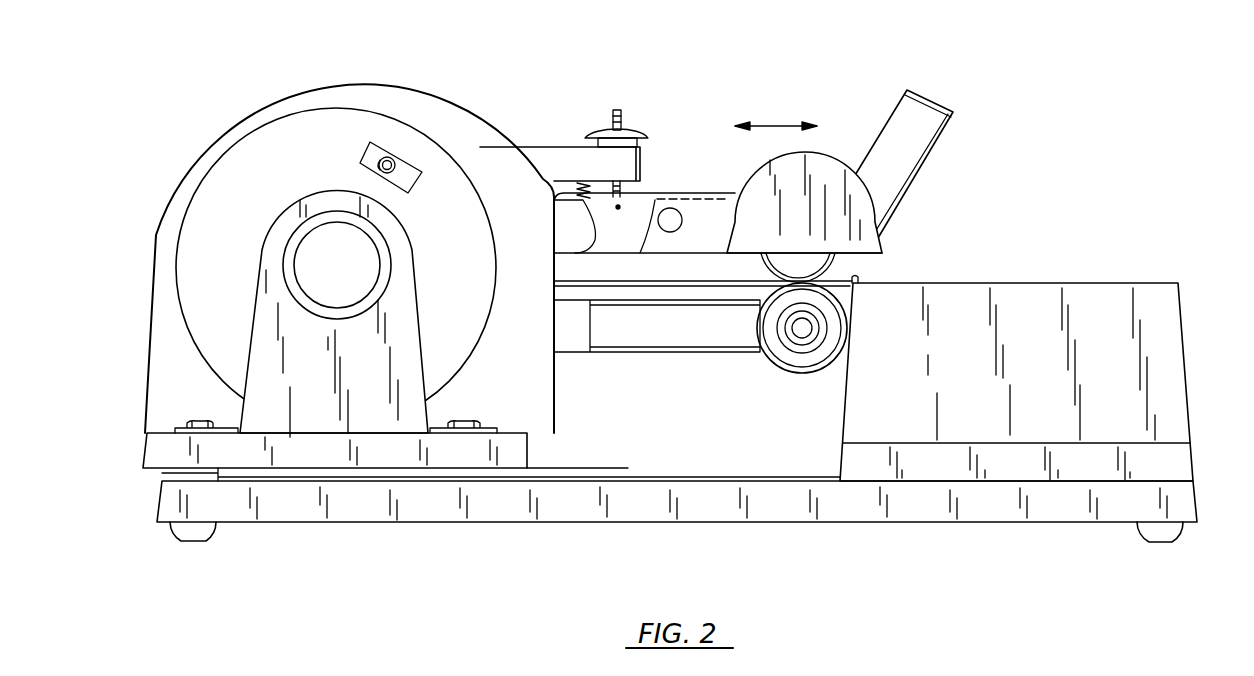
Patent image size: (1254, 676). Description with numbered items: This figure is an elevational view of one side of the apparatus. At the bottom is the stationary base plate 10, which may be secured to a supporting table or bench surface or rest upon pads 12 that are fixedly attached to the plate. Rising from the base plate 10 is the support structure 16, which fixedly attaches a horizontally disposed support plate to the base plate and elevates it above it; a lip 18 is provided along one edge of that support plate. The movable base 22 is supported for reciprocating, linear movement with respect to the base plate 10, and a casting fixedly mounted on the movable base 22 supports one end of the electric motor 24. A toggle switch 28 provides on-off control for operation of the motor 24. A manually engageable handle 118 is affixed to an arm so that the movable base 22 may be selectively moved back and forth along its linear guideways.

The stationary base plate 10 is at (812, 505).
The pads 12 is at (200, 530).
The support structure 16 is at (1165, 313).
The lip 18 is at (855, 278).
The movable base 22 is at (148, 455).
The electric motor 24 is at (207, 213).
The toggle switch 28 is at (384, 152).
The handle 118 is at (930, 122).